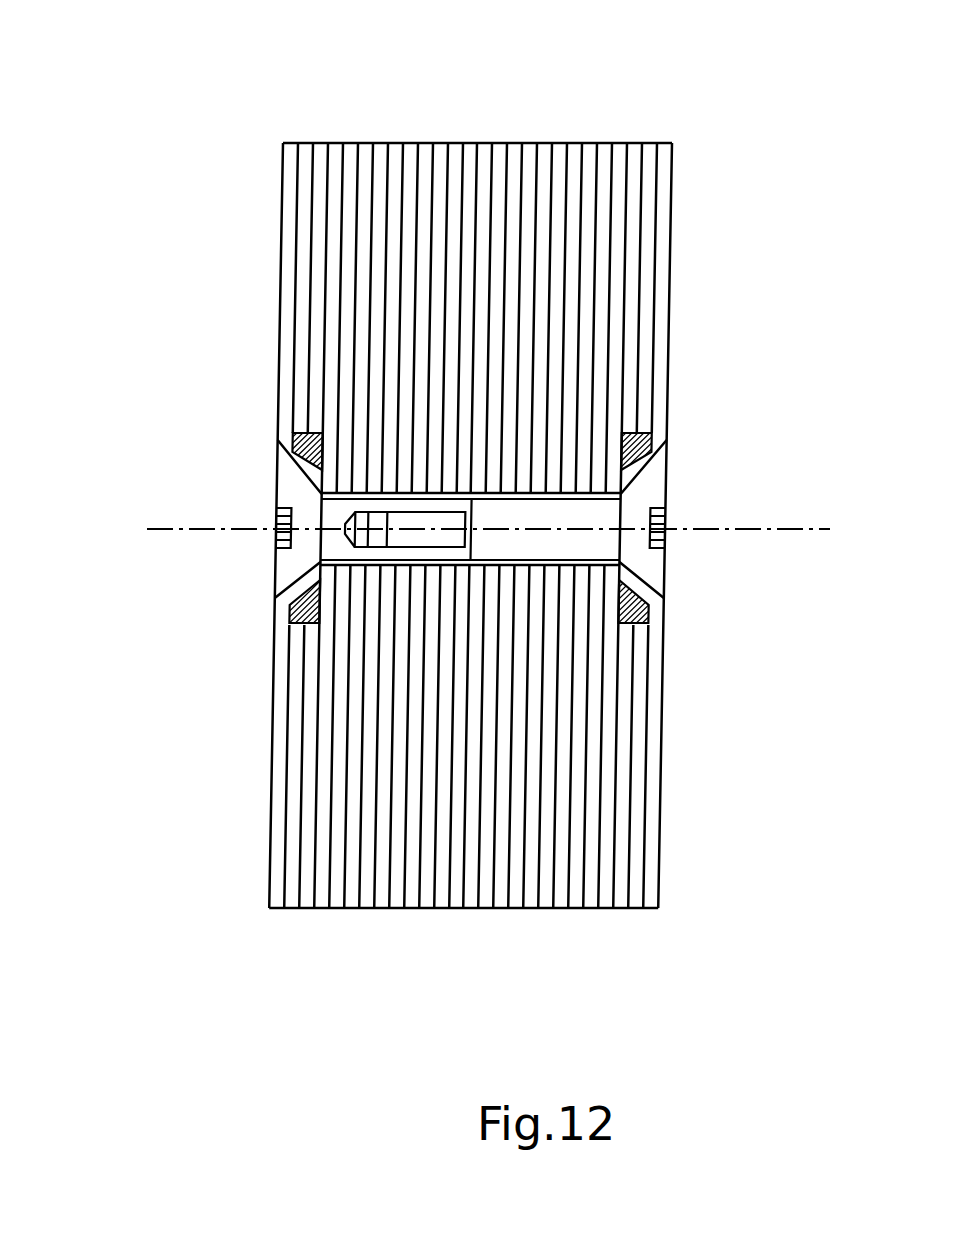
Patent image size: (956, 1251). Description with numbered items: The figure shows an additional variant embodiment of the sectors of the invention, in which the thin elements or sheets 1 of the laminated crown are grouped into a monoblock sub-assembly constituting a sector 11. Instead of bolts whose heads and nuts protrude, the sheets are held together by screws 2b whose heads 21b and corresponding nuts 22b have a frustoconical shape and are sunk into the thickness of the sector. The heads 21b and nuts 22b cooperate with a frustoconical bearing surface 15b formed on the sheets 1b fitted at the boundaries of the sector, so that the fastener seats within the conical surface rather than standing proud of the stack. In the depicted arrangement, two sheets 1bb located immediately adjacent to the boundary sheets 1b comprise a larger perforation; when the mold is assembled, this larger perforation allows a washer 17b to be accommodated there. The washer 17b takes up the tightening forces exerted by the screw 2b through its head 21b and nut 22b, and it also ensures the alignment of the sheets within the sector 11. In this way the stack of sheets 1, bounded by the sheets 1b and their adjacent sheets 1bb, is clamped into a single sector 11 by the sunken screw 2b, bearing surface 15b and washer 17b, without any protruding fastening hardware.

The thin elements 1 is at (438, 143).
The sectors 11 is at (327, 970).
The sheets fitted at the boundaries of each sector 1b is at (653, 745).
The sheets immediately adjacent to the boundary sheets 1bb is at (712, 952).
The washer 17b is at (630, 625).
The frustoconical bearing surface 15b is at (657, 578).
The nuts 22b is at (293, 563).
The heads 21b is at (655, 483).
The screws 2b is at (555, 513).